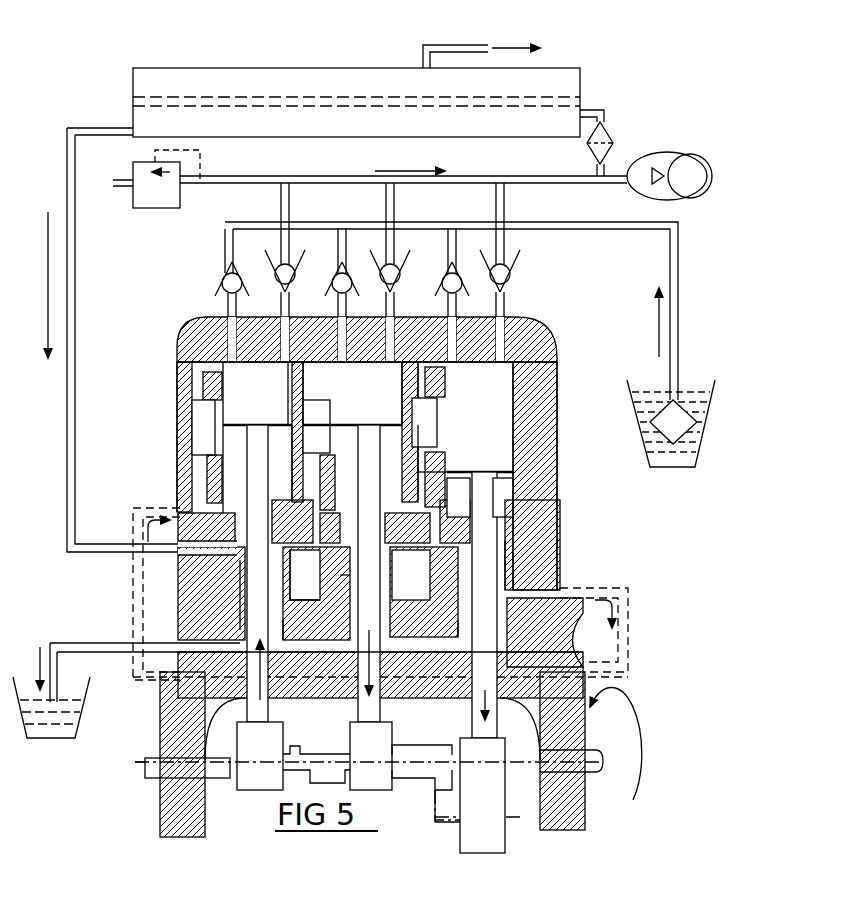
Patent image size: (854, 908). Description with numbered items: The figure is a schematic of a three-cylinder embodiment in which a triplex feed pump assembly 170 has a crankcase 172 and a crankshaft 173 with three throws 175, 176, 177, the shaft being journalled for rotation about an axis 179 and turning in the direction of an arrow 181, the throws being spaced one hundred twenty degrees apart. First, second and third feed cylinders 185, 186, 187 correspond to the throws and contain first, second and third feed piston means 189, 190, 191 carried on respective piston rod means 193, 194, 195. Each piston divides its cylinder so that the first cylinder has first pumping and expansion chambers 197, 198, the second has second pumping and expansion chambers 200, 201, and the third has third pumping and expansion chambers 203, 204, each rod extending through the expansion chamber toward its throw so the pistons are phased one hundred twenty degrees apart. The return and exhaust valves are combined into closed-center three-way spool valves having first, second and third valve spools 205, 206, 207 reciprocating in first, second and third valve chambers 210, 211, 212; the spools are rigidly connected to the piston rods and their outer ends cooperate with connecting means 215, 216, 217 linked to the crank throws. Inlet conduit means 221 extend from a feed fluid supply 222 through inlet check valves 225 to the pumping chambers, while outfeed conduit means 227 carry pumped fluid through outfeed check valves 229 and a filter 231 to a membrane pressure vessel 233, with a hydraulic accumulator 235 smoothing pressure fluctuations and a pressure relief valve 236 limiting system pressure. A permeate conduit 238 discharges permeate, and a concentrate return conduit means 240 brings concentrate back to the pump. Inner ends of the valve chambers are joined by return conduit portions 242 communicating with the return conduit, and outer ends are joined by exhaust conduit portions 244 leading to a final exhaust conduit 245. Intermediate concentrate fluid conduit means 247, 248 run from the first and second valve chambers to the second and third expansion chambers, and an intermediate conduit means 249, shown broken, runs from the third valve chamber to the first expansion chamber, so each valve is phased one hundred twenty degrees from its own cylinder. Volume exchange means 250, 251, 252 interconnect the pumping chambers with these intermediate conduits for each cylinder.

The triplex feed pump assembly 170 is at (574, 295).
The crankcase 172 is at (540, 352).
The crankshaft 173 is at (150, 760).
The first throw 175 is at (290, 752).
The second throw 176 is at (400, 750).
The third throw 177 is at (450, 833).
The axis 179 is at (148, 782).
The arrow 181 is at (608, 810).
The first feed cylinder 185 is at (178, 371).
The second feed cylinder 186 is at (405, 352).
The third feed cylinder 187 is at (560, 403).
The first feed piston means 189 is at (225, 432).
The second feed piston means 190 is at (366, 560).
The third feed piston means 191 is at (518, 476).
The first piston rod means 193 is at (258, 450).
The second piston rod means 194 is at (392, 470).
The third piston rod means 195 is at (480, 558).
The first pumping chamber 197 is at (257, 393).
The first expansion chamber 198 is at (235, 467).
The second pumping chamber 200 is at (352, 393).
The second expansion chamber 201 is at (402, 498).
The third pumping chamber 203 is at (465, 417).
The third expansion chamber 204 is at (520, 512).
The first valve spool 205 is at (255, 600).
The second valve spool 206 is at (325, 600).
The third valve spool 207 is at (470, 627).
The first valve chamber 210 is at (243, 633).
The second valve chamber 211 is at (350, 632).
The third valve chamber 212 is at (455, 600).
The first connecting means 215 is at (262, 737).
The second connecting means 216 is at (380, 730).
The third connecting means 217 is at (488, 760).
The inlet conduit means 221 is at (555, 222).
The feed fluid supply 222 is at (650, 440).
The inlet check valves 225 is at (460, 276).
The outfeed conduit means 227 is at (475, 175).
The outfeed check valves 229 is at (512, 265).
The filter 231 is at (613, 135).
The membrane pressure vessel 233 is at (262, 82).
The hydraulic accumulator 235 is at (645, 158).
The pressure relief valve 236 is at (172, 198).
The permeate conduit 238 is at (450, 44).
The concentrate return conduit means 240 is at (75, 258).
The concentrate fluid return conduit portions 242 is at (378, 540).
The exhaust conduit portions 244 is at (410, 650).
The final exhaust conduit 245 is at (80, 645).
The intermediate concentrate fluid conduit means 247 is at (342, 578).
The intermediate concentrate fluid conduit means 248 is at (470, 578).
The intermediate concentrate fluid conduit means 249 is at (175, 506).
The first volume exchange means 250 is at (200, 428).
The second volume exchange means 251 is at (313, 418).
The third volume exchange means 252 is at (430, 420).